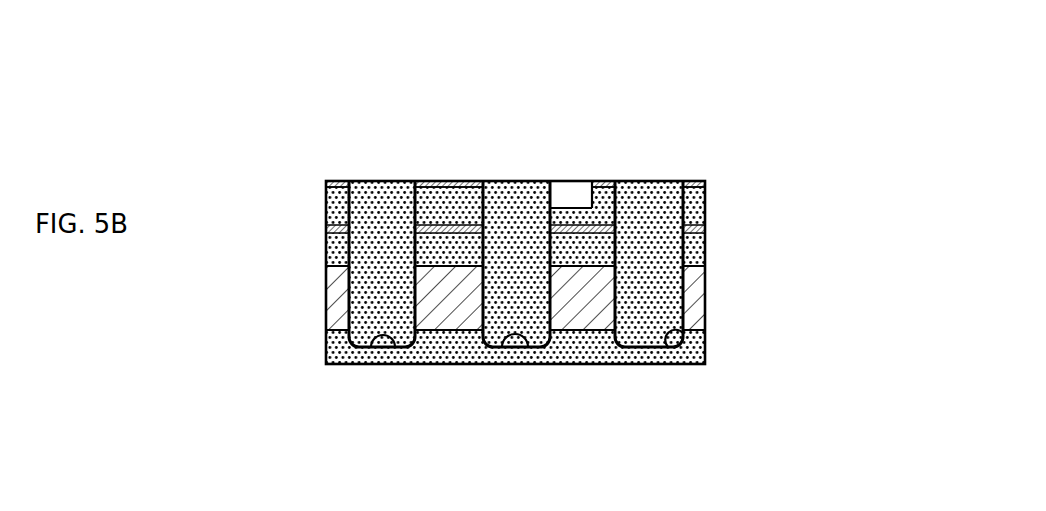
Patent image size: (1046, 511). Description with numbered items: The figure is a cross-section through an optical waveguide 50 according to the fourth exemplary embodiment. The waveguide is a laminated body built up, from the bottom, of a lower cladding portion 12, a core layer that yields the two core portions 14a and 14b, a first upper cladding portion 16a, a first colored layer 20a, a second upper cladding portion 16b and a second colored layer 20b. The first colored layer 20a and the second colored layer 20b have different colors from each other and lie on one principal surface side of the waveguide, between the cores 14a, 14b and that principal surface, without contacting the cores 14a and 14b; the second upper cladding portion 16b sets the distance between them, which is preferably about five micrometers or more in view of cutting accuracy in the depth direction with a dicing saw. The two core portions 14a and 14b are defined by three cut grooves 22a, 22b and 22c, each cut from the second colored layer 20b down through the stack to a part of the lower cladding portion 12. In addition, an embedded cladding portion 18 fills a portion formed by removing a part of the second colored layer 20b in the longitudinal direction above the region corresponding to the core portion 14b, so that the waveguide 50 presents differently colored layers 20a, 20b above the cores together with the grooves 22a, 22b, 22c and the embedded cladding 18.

The optical waveguide 50 is at (560, 258).
The lower cladding portion 12 is at (705, 340).
The core portion 14a is at (447, 313).
The core portion 14b is at (583, 310).
The first upper cladding portion 16a is at (326, 253).
The second upper cladding portion 16b is at (326, 204).
The embedded cladding portion 18 is at (382, 205).
The first colored layer 20a is at (590, 207).
The second colored layer 20b is at (335, 180).
The cut groove 22a is at (398, 352).
The cut groove 22b is at (522, 352).
The cut groove 22c is at (680, 340).